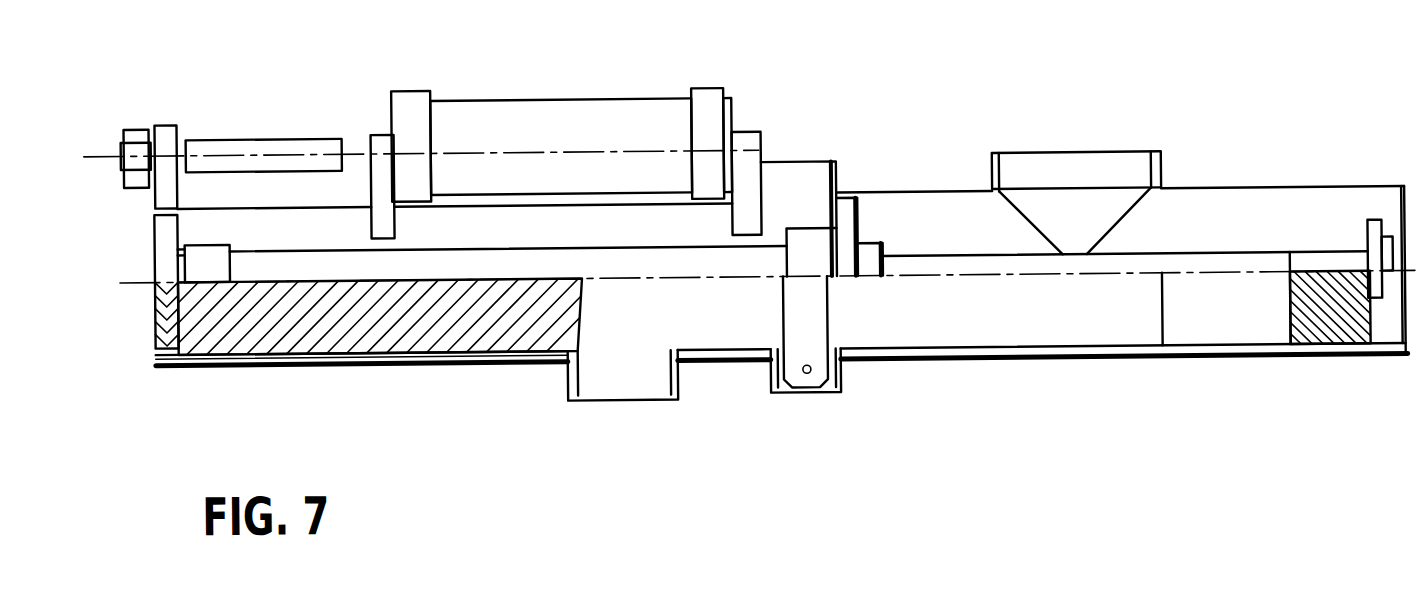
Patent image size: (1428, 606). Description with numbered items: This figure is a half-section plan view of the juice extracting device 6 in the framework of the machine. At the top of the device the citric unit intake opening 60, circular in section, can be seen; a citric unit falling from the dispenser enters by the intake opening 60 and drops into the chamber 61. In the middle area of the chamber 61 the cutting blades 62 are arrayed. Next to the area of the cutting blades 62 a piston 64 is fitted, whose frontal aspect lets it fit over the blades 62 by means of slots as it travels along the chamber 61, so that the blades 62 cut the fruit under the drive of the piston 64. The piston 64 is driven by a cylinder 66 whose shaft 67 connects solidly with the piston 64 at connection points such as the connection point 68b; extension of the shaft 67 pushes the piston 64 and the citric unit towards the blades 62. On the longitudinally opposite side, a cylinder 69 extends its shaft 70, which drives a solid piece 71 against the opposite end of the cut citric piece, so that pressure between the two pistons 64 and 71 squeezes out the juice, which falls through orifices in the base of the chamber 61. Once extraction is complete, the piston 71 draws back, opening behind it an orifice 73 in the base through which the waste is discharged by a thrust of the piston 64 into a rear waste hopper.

The shaft 70 is at (263, 146).
The cylinder 69 is at (535, 139).
The juice extracting device 6 is at (792, 165).
The intake opening 60 is at (1072, 154).
The chamber 61 is at (1080, 327).
The solid piece 71 is at (385, 343).
The cylinder 66 is at (507, 264).
The orifice 73 is at (613, 368).
The cutting blades 62 is at (806, 337).
The shaft 67 is at (943, 271).
The piston 64 is at (1207, 323).
The connection point 68b is at (1377, 309).